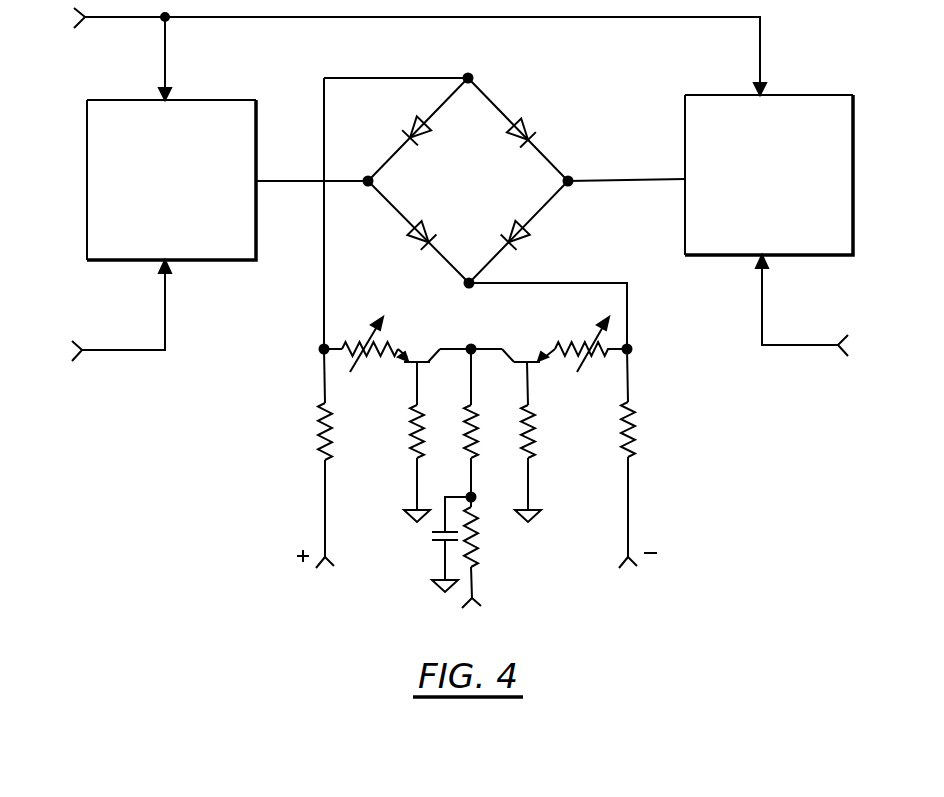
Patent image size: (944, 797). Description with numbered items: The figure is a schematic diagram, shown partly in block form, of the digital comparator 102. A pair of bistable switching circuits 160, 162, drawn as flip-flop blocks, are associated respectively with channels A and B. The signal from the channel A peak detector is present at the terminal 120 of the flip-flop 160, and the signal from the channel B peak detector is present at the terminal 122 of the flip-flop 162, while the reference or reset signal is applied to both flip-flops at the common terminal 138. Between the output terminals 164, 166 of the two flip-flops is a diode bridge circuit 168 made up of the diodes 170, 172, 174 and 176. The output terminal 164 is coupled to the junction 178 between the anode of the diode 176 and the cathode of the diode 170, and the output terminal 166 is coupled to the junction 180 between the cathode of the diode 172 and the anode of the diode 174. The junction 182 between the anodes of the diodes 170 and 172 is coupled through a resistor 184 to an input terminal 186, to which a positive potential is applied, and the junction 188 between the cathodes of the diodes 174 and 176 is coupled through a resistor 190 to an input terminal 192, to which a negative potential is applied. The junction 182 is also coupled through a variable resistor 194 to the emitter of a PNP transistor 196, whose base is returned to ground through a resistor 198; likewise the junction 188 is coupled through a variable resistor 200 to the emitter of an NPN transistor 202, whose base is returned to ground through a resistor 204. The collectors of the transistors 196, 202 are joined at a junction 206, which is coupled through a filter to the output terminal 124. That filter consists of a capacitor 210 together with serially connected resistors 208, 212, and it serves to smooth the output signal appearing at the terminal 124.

The digital comparator 102 is at (430, 43).
The common terminal 138 is at (86, 30).
The bistable switching circuit 160 is at (87, 155).
The terminal 120 is at (80, 348).
The output terminal 164 is at (258, 180).
The junction 182 is at (472, 78).
The diode bridge circuit 168 is at (492, 190).
The diode 170 is at (415, 118).
The diode 172 is at (528, 128).
The diode 176 is at (412, 236).
The diode 174 is at (525, 236).
The junction 178 is at (366, 180).
The junction 180 is at (570, 180).
The output terminal 166 is at (684, 182).
The junction 188 is at (470, 287).
The bistable switching circuit 162 is at (734, 94).
The terminal 122 is at (842, 343).
The variable resistor 194 is at (352, 343).
The PNP transistor 196 is at (407, 364).
The junction 206 is at (471, 346).
The NPN transistor 202 is at (541, 364).
The variable resistor 200 is at (588, 332).
The resistor 184 is at (322, 418).
The input terminal 186 is at (330, 566).
The resistor 198 is at (410, 425).
The resistor 208 is at (475, 425).
The resistor 204 is at (534, 434).
The resistor 190 is at (638, 441).
The input terminal 192 is at (628, 562).
The capacitor 210 is at (437, 548).
The resistor 212 is at (478, 546).
The output terminal 124 is at (478, 605).